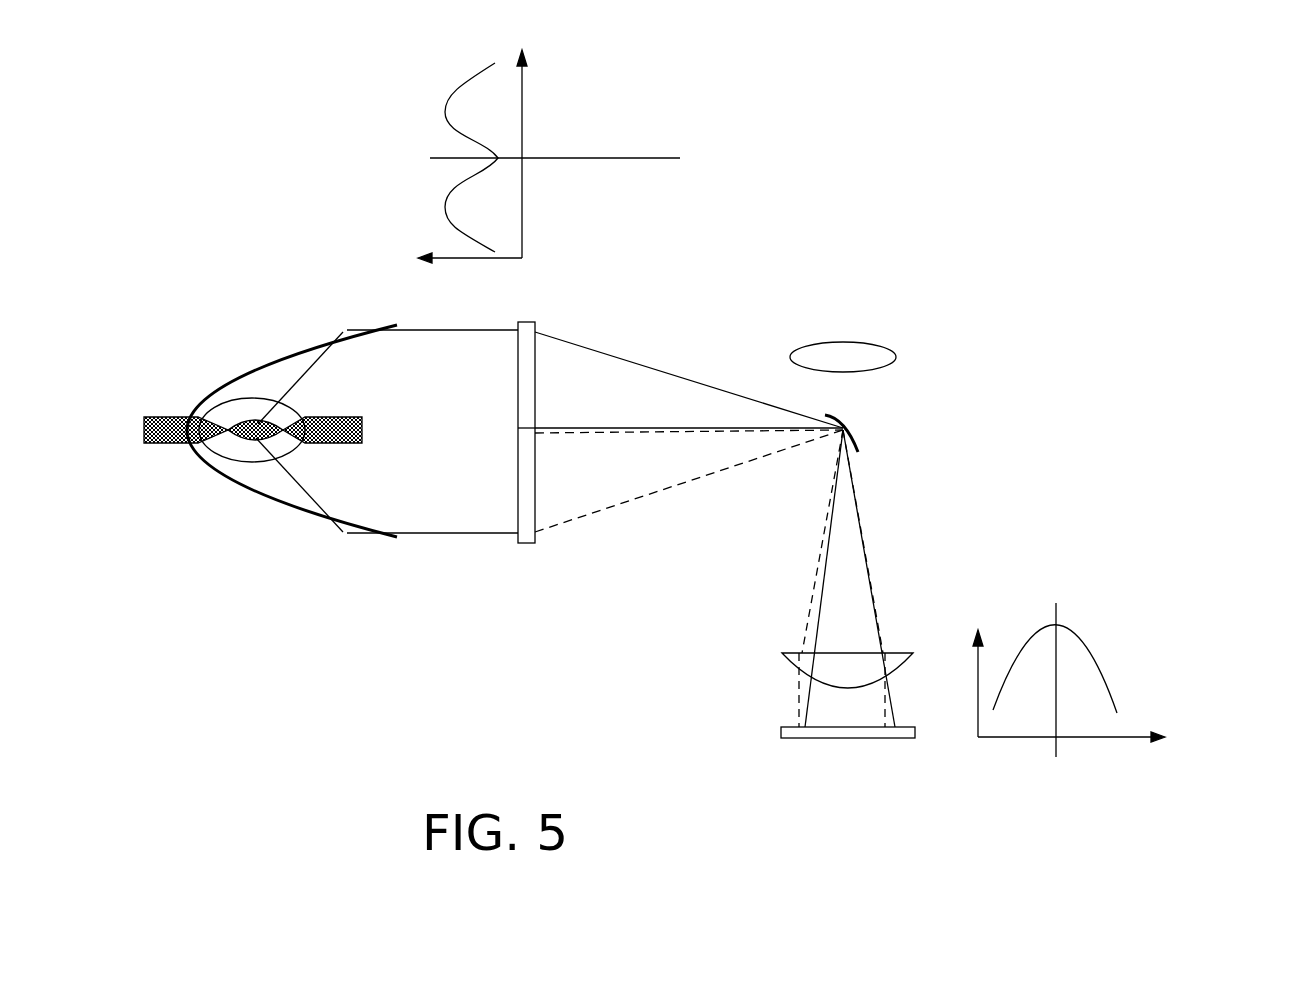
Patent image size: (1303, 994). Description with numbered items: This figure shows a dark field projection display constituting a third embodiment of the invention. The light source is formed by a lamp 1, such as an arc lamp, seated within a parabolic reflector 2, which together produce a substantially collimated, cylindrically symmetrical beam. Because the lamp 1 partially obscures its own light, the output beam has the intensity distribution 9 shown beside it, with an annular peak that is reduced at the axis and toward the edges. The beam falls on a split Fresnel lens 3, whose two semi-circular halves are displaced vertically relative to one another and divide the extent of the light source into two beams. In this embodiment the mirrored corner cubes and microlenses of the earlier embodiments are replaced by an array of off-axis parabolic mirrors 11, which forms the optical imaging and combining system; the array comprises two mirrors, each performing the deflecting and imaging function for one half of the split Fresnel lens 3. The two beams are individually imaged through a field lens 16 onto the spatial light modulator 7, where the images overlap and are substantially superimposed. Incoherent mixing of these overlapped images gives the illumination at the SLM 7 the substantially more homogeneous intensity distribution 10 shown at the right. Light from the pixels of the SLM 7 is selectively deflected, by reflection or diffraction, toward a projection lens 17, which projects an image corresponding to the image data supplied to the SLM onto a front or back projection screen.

The lamp 1 is at (250, 443).
The parabolic reflector 2 is at (216, 488).
The split Fresnel lens 3 is at (523, 555).
The spatial light modulator (SLM) 7 is at (847, 738).
The intensity distribution 9 is at (612, 120).
The intensity distribution 10 is at (1164, 680).
The array of off-axis parabolic mirrors 11 is at (868, 427).
The field lens 16 is at (783, 660).
The projection lens 17 is at (860, 333).